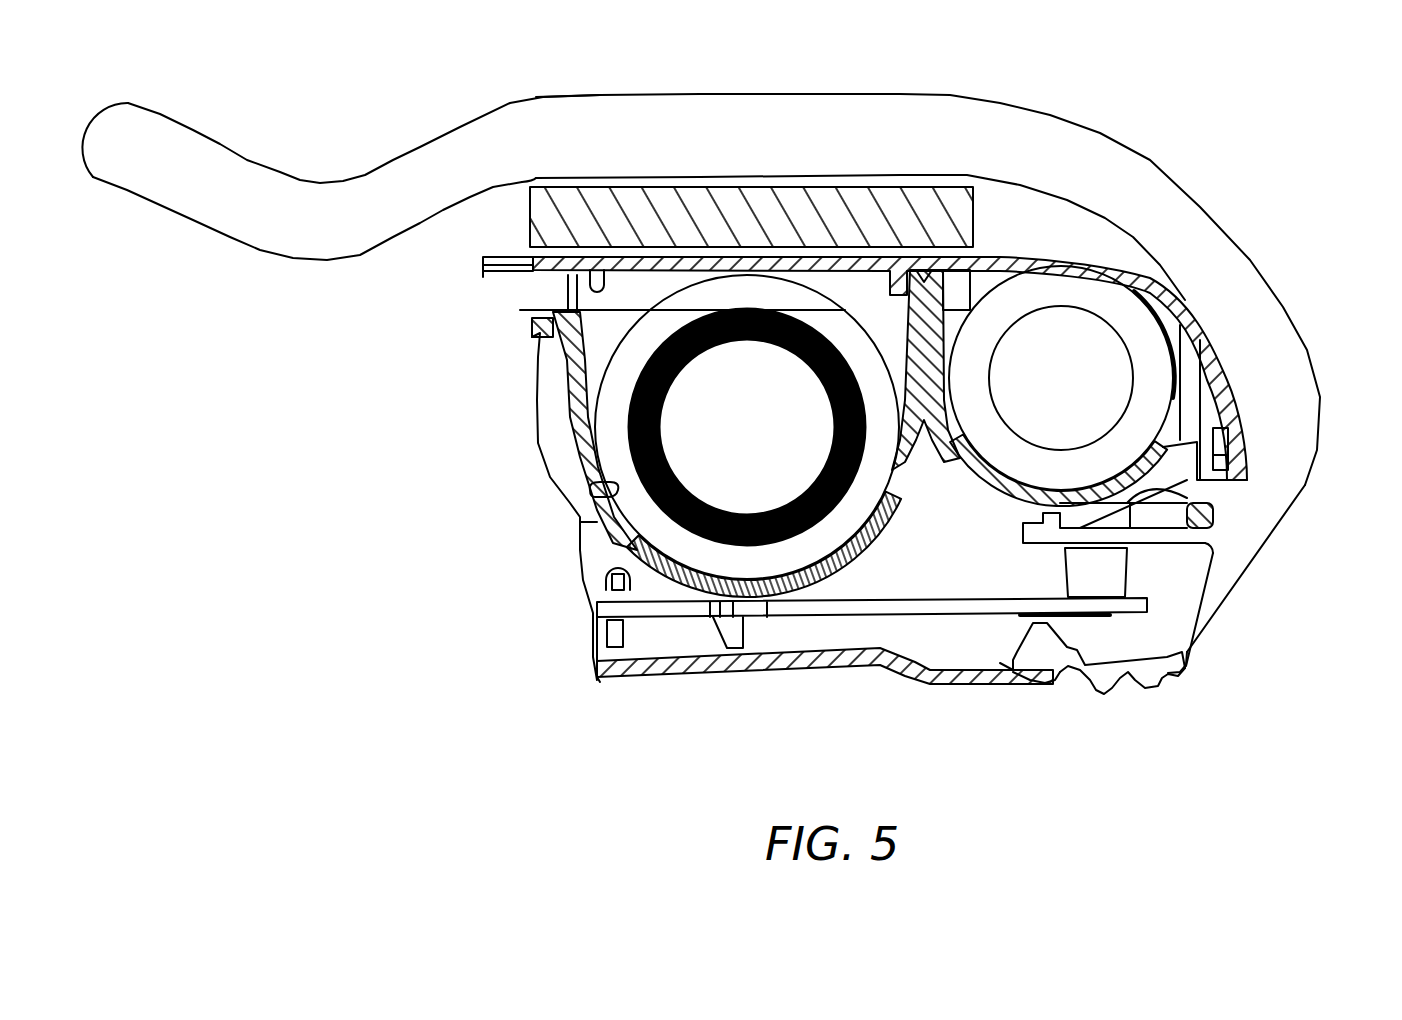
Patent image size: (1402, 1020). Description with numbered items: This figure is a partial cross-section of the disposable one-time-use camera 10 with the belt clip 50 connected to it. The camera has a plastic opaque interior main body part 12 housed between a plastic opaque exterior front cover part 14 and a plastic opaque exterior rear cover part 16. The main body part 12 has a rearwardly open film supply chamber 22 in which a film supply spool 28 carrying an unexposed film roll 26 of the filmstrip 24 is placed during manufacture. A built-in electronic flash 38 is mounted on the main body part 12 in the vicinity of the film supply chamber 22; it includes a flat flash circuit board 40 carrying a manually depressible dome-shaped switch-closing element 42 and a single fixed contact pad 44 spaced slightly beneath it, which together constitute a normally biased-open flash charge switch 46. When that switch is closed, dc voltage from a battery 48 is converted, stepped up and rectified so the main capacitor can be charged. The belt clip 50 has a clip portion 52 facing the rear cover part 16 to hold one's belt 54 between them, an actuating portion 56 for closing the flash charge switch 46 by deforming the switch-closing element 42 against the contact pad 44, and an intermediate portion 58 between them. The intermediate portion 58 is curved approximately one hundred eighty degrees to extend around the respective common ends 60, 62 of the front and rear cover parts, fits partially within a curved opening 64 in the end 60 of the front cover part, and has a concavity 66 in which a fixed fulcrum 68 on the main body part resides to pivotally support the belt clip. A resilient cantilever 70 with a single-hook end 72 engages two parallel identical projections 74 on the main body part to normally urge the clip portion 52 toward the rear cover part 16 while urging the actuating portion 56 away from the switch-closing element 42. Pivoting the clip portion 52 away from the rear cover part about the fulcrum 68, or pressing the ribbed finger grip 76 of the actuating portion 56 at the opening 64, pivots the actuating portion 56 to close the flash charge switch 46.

The disposable one-time-use camera 10 is at (607, 703).
The main body part 12 is at (562, 453).
The front cover part 14 is at (675, 680).
The rear cover part 16 is at (1037, 245).
The film supply chamber 22 is at (608, 486).
The filmstrip 24 is at (532, 318).
The unexposed film roll 26 is at (630, 422).
The film supply spool 28 is at (640, 517).
The electronic flash 38 is at (827, 622).
The flash circuit board 40 is at (893, 607).
The switch-closing element 42 is at (993, 617).
The contact pad 44 is at (1050, 607).
The flash charge switch 46 is at (1100, 622).
The battery 48 is at (1102, 345).
The belt clip 50 is at (1170, 158).
The clip portion 52 is at (415, 165).
The belt 54 is at (607, 195).
The actuating portion 56 is at (1033, 653).
The intermediate portion 58 is at (1300, 405).
The end of the front cover part 60 is at (1203, 640).
The end of the rear cover part 62 is at (1212, 347).
The curved opening 64 is at (1060, 682).
The concavity 66 is at (1203, 520).
The fixed fulcrum 68 is at (1203, 503).
The resilient cantilever 70 is at (1167, 542).
The single-hook end 72 is at (1037, 517).
The projections 74 is at (1070, 520).
The ribbed finger grip 76 is at (1145, 685).